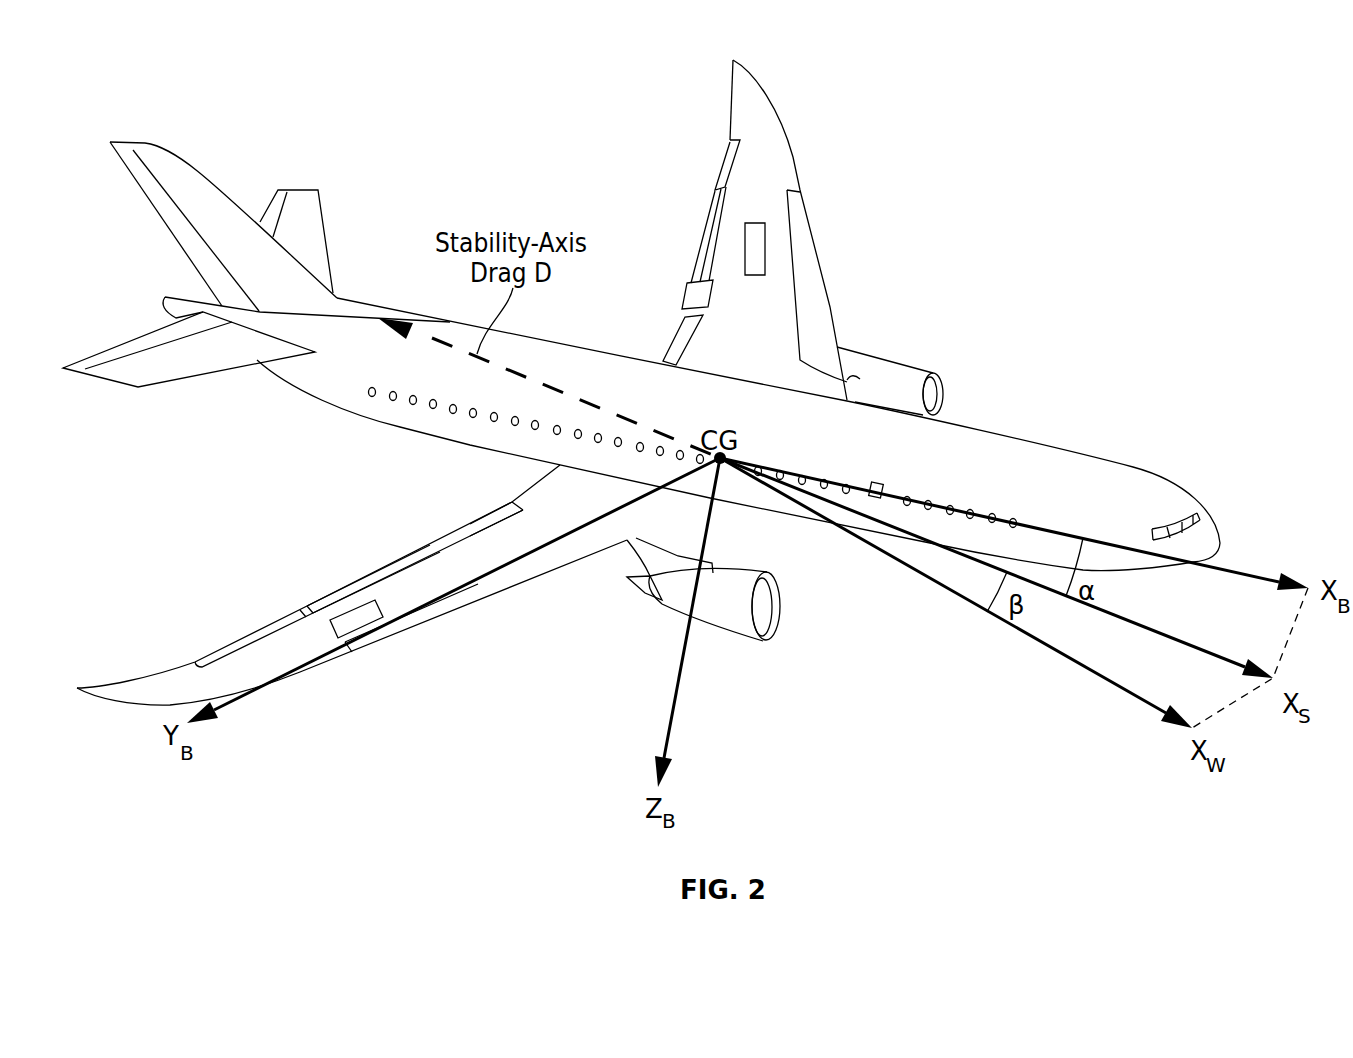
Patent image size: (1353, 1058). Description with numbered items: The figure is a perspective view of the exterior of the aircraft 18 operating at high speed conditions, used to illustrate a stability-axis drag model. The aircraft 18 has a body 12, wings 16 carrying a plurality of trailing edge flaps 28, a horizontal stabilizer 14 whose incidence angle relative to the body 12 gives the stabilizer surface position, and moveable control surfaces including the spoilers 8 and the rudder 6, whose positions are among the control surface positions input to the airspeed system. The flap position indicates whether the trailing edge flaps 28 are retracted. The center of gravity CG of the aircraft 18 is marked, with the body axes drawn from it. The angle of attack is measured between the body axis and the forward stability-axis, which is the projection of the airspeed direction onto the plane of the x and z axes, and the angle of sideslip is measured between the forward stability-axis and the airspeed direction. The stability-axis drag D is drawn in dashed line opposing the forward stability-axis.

The aircraft 18 is at (1078, 71).
The body 12 is at (332, 403).
The rudder 6 is at (165, 227).
The horizontal stabilizer 14 is at (328, 218).
The trailing edge flaps 28 is at (698, 270).
The spoilers 8 is at (743, 238).
The wings 16 is at (707, 348).